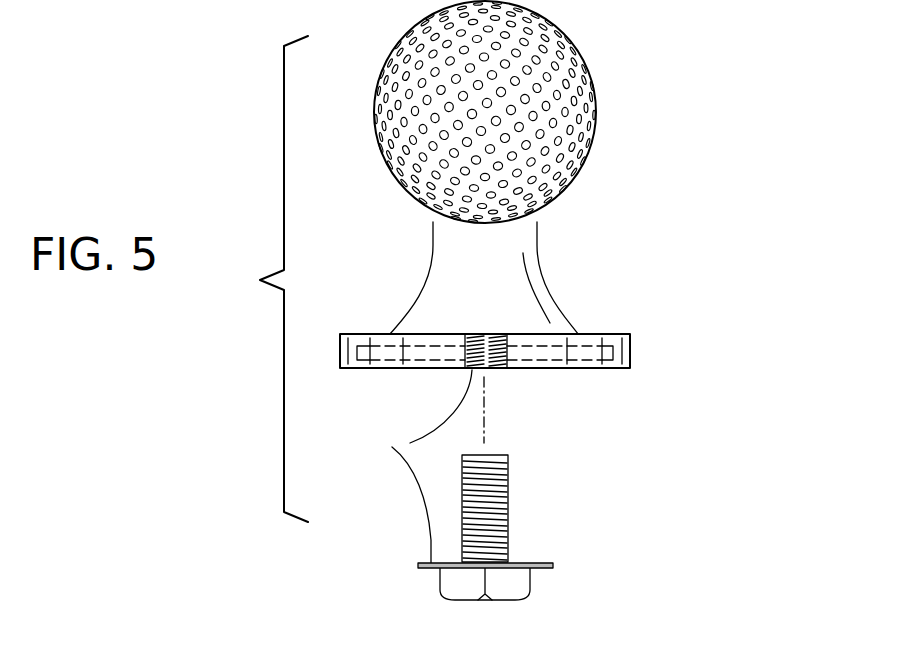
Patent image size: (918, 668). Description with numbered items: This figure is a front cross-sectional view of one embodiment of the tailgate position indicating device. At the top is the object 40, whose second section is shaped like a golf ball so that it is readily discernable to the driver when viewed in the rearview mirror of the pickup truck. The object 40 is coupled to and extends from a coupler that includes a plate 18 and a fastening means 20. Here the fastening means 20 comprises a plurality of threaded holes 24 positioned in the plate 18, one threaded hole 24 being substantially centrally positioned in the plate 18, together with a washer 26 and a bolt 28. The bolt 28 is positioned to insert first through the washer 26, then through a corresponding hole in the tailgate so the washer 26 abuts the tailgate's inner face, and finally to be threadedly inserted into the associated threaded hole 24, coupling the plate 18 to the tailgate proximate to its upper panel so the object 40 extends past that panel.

The object 40 is at (612, 117).
The plate 18 is at (585, 352).
The threaded hole 24 is at (493, 363).
The fastening means 20 is at (466, 456).
The bolt 28 is at (490, 503).
The washer 26 is at (553, 564).